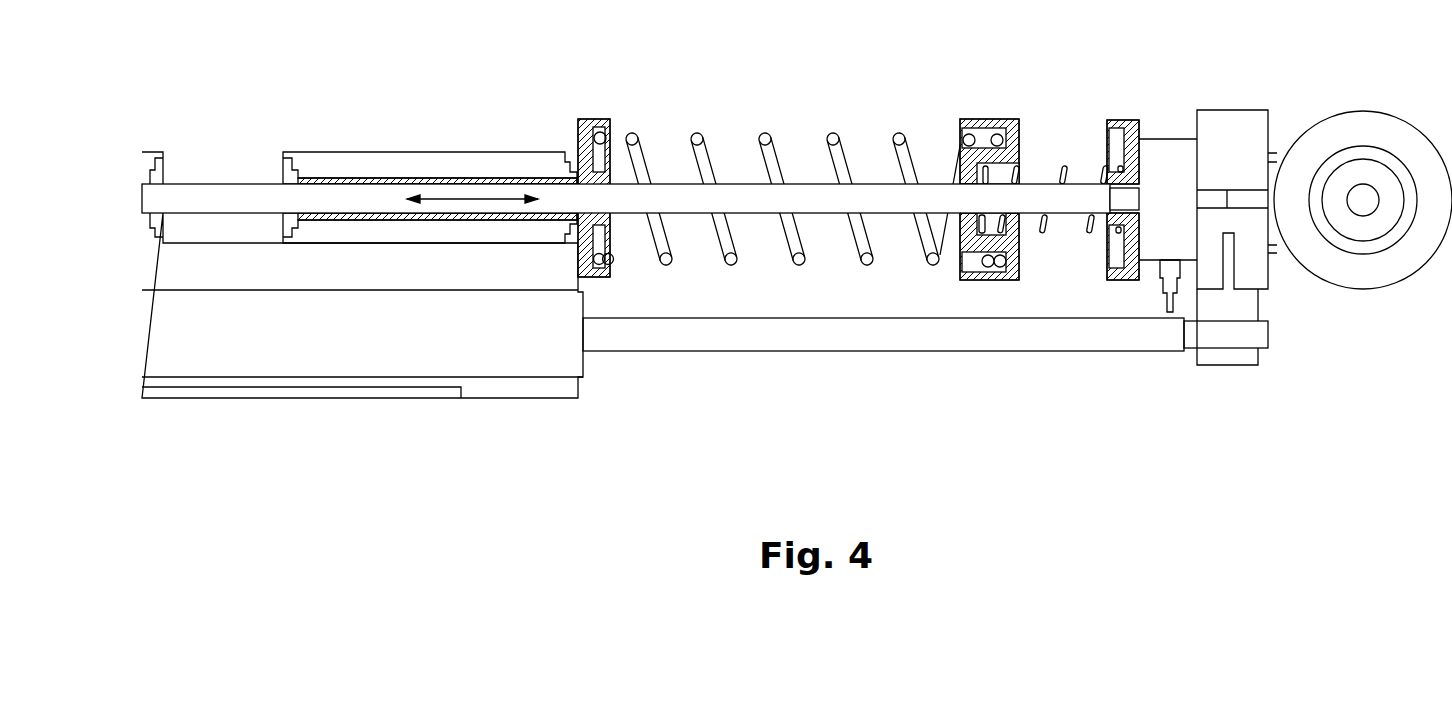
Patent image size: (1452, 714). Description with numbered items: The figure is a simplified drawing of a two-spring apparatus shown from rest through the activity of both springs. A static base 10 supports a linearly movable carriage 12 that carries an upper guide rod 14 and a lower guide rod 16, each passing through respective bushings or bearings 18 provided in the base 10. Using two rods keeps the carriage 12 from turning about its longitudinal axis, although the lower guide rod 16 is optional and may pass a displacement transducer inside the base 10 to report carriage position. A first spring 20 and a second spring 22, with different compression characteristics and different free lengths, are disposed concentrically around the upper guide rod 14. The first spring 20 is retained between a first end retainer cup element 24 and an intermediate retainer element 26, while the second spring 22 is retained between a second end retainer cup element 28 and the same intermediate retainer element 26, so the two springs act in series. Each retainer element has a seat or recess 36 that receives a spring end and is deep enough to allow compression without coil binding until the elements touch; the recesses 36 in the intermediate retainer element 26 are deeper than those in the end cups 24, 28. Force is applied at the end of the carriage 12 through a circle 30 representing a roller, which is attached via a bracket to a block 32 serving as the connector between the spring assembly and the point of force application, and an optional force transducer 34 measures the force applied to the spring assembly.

The static base 10 is at (348, 430).
The linearly movable carriage 12 is at (1241, 440).
The upper guide rod 14 is at (217, 182).
The lower guide rod 16 is at (838, 343).
The bushings or bearings 18 is at (430, 177).
The first spring 20 is at (765, 133).
The second spring 22 is at (1064, 166).
The first end retainer cup element 24 is at (597, 280).
The intermediate retainer element 26 is at (993, 281).
The second end retainer cup element 28 is at (1121, 281).
The circle (roller) 30 is at (1359, 292).
The block 32 is at (1230, 110).
The force transducer 34 is at (1175, 139).
The seat or recess 36 is at (604, 134).